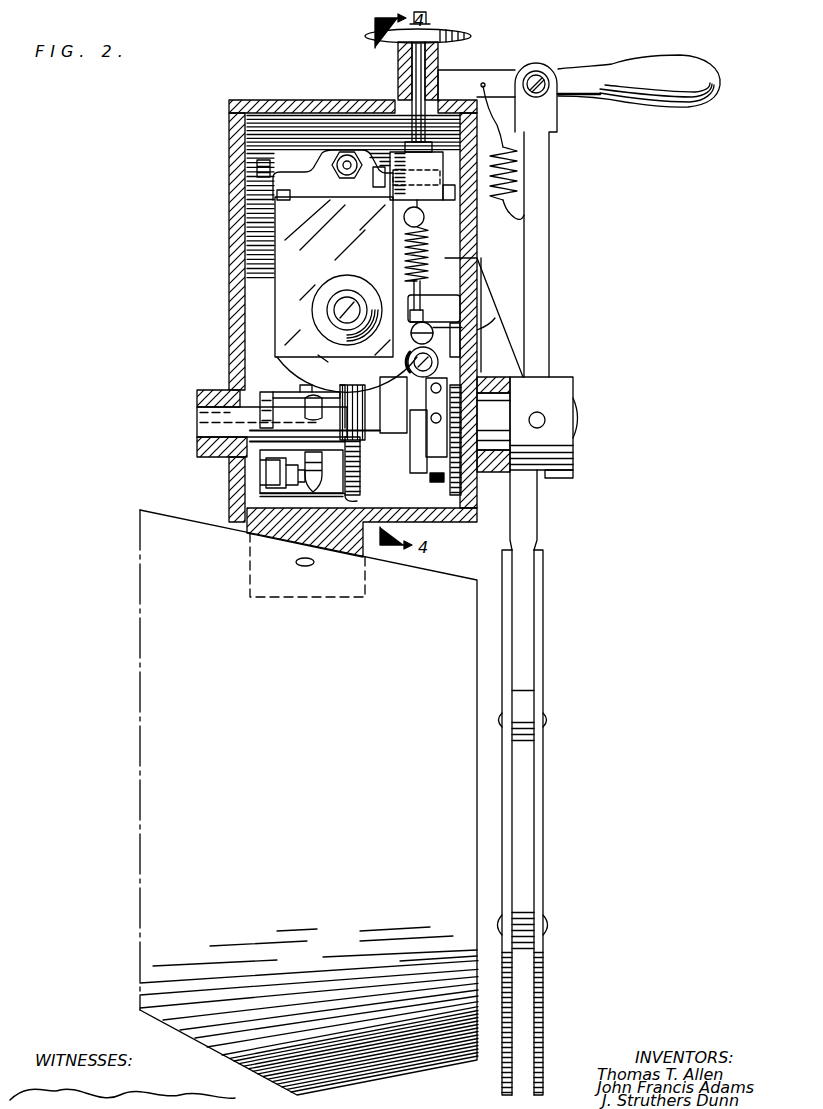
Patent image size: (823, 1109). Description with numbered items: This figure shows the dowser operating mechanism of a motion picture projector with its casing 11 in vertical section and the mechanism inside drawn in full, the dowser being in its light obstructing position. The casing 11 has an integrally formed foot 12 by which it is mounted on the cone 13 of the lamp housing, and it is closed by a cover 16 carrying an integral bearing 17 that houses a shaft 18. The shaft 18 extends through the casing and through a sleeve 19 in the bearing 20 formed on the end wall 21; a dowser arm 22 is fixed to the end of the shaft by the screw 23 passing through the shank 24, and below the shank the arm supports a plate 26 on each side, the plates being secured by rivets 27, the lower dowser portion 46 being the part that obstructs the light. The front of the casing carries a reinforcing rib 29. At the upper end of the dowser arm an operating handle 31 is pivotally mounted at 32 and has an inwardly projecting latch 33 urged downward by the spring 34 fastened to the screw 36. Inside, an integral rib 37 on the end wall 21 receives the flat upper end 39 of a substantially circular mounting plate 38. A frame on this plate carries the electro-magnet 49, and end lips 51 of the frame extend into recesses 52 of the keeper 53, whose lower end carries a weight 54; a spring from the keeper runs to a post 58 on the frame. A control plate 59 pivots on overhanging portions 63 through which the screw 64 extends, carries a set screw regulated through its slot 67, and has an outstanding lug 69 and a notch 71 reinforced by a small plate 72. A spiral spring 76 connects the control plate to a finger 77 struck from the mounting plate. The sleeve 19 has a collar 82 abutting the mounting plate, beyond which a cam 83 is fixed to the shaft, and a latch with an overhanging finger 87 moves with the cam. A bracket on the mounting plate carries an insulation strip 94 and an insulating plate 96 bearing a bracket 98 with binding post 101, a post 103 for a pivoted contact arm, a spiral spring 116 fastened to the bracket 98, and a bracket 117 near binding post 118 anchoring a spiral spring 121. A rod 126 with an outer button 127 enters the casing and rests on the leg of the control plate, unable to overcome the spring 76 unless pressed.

The casing 11 is at (268, 100).
The foot 12 is at (280, 520).
The cone 13 is at (309, 802).
The cover 16 is at (230, 153).
The bearing 17 is at (205, 390).
The shaft 18 is at (213, 429).
The sleeve 19 is at (490, 380).
The bearing 20 is at (500, 472).
The end wall 21 is at (476, 238).
The dowser arm 22 is at (550, 323).
The screw 23 is at (546, 420).
The shank 24 is at (563, 478).
The plate 26 is at (515, 840).
The rivets 27 is at (545, 722).
The rib 29 is at (488, 305).
The operating handle 31 is at (690, 108).
The pivot 32 is at (540, 72).
The latch 33 is at (465, 74).
The spring 34 is at (517, 177).
The screw 36 is at (502, 152).
The rib 37 is at (416, 176).
The mounting plate 38 is at (484, 316).
The flat upper end 39 is at (416, 177).
The fork 46 is at (545, 874).
The electro-magnet 49 is at (316, 349).
The end lips 51 is at (295, 196).
The recesses 52 is at (257, 191).
The keeper 53 is at (334, 277).
The weight 54 is at (326, 308).
The post 58 is at (340, 177).
The control plate 59 is at (404, 235).
The overhanging portions 63 is at (443, 195).
The screw 64 is at (376, 190).
The slot 67 is at (495, 318).
The lug 69 is at (410, 440).
The notch 71 is at (432, 462).
The small plate 72 is at (433, 389).
The spiral spring 76 is at (405, 266).
The finger 77 is at (435, 304).
The collar 82 is at (493, 421).
The cam 83 is at (451, 485).
The overhanging finger 87 is at (385, 433).
The insulation strip 94 is at (361, 481).
The insulating plate 96 is at (368, 498).
The bracket 98 is at (292, 410).
The binding post 101 is at (272, 384).
The post 103 is at (260, 468).
The spiral spring 116 is at (335, 400).
The bracket 117 is at (260, 505).
The binding post 118 is at (266, 485).
The spiral spring 121 is at (398, 72).
The rod 126 is at (418, 89).
The button 127 is at (455, 35).